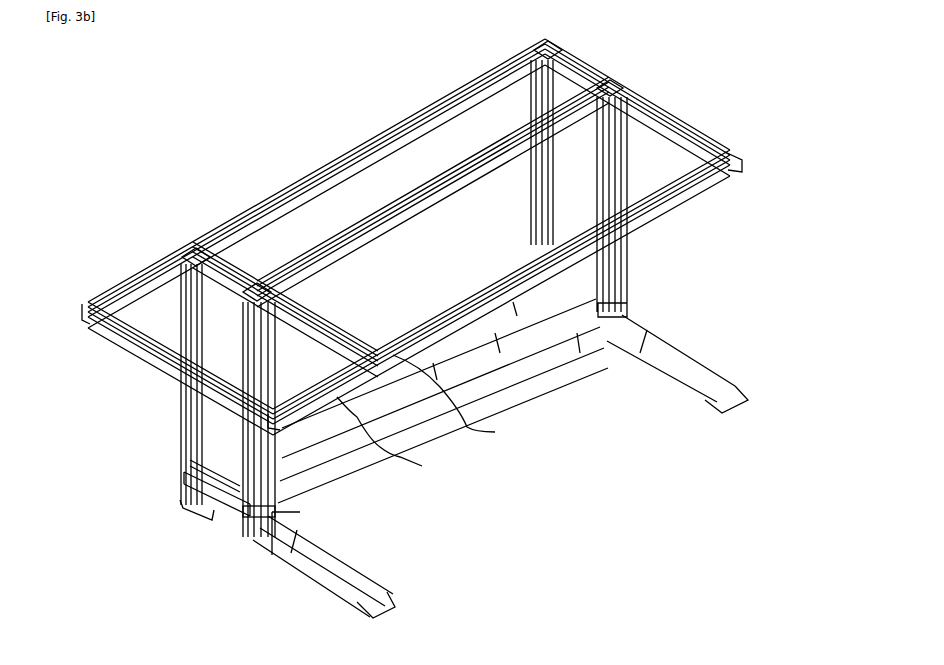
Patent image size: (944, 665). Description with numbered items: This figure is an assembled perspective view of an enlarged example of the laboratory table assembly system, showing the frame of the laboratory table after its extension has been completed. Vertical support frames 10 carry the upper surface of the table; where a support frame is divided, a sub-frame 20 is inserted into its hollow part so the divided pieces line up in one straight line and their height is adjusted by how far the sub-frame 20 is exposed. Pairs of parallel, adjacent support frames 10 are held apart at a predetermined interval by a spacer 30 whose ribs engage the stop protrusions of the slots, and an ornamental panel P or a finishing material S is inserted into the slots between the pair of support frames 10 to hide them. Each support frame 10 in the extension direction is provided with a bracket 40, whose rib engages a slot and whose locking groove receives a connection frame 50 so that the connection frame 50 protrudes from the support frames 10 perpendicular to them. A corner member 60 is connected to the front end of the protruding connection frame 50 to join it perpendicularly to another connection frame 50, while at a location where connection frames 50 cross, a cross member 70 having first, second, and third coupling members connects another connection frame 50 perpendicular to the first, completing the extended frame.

The support frame 10 is at (248, 540).
The sub-frame 20 is at (245, 522).
The spacer 30 is at (217, 512).
The bracket 40 is at (178, 253).
The connection frame 50 is at (323, 580).
The corner member 60 is at (88, 320).
The cross member 70 is at (452, 398).
The ornamental panel P is at (200, 428).
The finishing material S is at (200, 472).